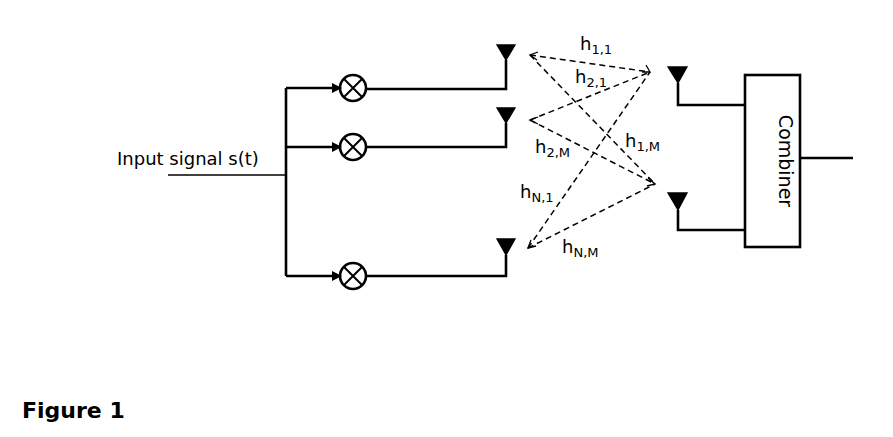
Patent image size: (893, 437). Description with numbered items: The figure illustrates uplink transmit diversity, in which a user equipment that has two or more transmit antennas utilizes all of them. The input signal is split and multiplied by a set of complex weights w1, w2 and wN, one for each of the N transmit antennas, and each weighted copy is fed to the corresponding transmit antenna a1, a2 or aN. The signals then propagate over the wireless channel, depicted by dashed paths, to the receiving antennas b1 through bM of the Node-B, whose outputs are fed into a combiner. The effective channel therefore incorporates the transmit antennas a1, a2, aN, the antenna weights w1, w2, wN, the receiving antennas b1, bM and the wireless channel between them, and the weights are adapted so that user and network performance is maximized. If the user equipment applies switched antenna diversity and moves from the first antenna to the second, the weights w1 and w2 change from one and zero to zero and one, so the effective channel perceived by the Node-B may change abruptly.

The complex weight w1 is at (353, 52).
The complex weight w2 is at (353, 111).
The complex weight wN is at (353, 240).
The transmit antenna a1 is at (451, 58).
The transmit antenna a2 is at (450, 119).
The transmit antenna aN is at (446, 245).
The receiving antenna b1 is at (706, 75).
The receiving antenna bM is at (706, 200).